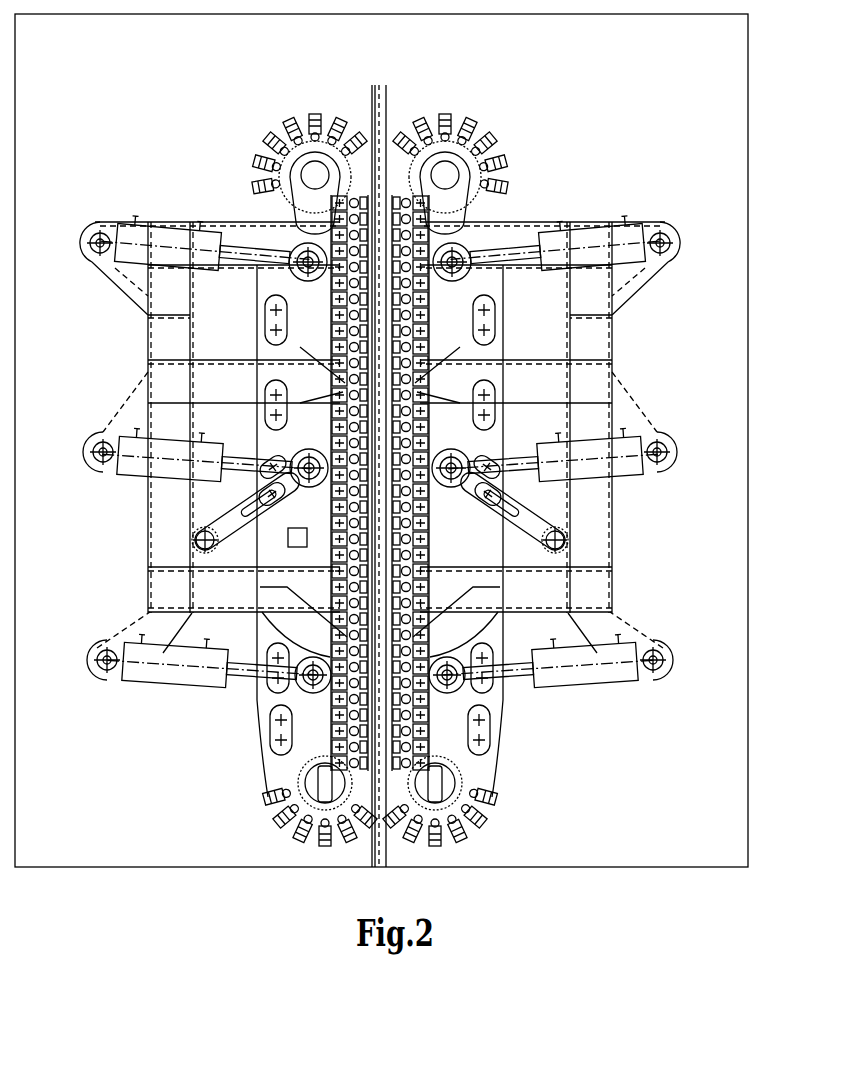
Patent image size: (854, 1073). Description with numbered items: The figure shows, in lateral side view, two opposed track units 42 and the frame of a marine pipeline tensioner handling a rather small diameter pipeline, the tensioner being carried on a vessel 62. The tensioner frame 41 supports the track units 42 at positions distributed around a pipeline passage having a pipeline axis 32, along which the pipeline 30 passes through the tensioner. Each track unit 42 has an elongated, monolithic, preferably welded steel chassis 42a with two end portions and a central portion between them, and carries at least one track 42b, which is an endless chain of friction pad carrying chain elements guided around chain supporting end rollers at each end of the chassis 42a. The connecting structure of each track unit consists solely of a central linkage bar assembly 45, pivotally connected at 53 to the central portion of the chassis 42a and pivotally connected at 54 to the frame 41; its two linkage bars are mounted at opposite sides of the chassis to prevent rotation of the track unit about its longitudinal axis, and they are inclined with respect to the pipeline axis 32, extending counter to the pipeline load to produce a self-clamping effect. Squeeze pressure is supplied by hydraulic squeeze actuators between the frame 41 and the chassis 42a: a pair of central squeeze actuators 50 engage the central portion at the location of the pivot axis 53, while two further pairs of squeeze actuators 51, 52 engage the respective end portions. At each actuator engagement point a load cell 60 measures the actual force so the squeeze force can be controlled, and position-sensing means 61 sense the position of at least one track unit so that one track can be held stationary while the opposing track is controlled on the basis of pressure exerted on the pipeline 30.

The pipeline 30 is at (385, 112).
The pipeline axis 32 is at (380, 85).
The tensioner frame 41 is at (656, 324).
The track unit 42 is at (510, 199).
The chassis 42a is at (492, 705).
The track 42b is at (482, 142).
The central linkage bar assembly 45 is at (530, 517).
The central squeeze actuator 50 is at (593, 455).
The squeeze actuator 51 is at (588, 653).
The squeeze actuator 52 is at (592, 235).
The pivot axis 53 is at (452, 465).
The pivotal connection to the frame 54 is at (567, 535).
The load cell 60 is at (310, 678).
The position-sensing means 61 is at (297, 537).
The vessel 62 is at (527, 867).